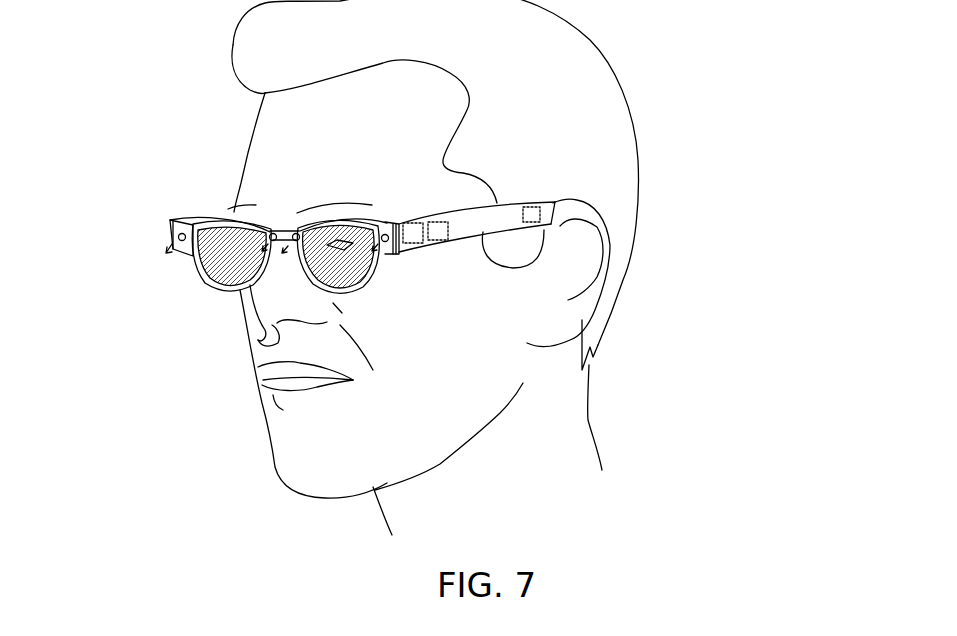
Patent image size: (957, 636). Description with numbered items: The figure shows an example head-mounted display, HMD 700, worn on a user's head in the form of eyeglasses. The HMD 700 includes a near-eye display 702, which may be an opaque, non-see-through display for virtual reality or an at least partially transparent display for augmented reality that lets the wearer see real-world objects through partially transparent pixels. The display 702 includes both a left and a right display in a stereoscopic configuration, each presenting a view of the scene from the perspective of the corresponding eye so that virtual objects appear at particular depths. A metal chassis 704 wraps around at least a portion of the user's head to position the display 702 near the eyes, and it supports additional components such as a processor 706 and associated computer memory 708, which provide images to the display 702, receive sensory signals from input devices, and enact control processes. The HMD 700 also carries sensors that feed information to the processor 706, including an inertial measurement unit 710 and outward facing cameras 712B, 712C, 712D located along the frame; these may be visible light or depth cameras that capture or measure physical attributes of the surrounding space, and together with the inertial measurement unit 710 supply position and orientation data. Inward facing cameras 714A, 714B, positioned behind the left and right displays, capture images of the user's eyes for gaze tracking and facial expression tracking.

The HMD 700 is at (147, 205).
The near-eye display 702 is at (200, 290).
The metal chassis 704 is at (458, 226).
The processor 706 is at (412, 223).
The computer memory 708 is at (433, 222).
The inertial measurement unit 710 is at (533, 207).
The outward facing camera 712B is at (178, 233).
The outward facing camera 712C is at (296, 232).
The outward facing camera 712D is at (385, 234).
The inward facing camera 714A is at (257, 273).
The inward facing camera 714B is at (313, 273).